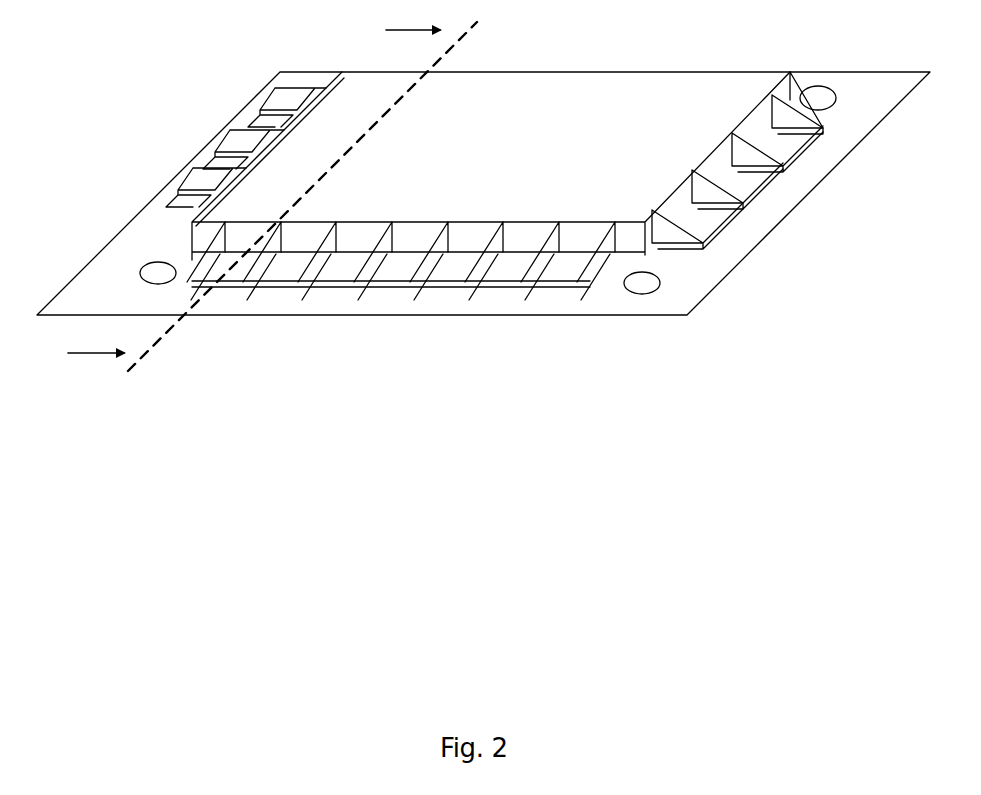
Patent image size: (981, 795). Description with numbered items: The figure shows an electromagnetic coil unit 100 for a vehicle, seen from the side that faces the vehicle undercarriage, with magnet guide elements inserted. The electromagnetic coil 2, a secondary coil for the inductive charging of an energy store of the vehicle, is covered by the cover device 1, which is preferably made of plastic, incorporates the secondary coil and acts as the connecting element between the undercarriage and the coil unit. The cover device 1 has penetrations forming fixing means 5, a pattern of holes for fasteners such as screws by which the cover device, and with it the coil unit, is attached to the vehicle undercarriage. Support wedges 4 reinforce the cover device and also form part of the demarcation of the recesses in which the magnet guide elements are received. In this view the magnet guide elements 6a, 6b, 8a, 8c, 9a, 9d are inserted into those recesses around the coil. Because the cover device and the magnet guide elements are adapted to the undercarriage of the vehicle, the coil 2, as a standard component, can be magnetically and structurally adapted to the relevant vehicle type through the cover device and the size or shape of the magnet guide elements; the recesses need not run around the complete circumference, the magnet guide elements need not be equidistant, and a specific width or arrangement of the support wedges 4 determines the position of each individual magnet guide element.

The electromagnetic coil unit 100 is at (474, 244).
The cover device 1 is at (483, 265).
The electromagnetic coil 2 is at (456, 268).
The support wedge 4 is at (274, 245).
The fixing means 5 is at (642, 285).
The magnet guide element 6a is at (712, 217).
The magnet guide element 6b is at (747, 175).
The magnet guide element 8a is at (280, 100).
The magnet guide element 8c is at (208, 178).
The magnet guide element 9a is at (215, 274).
The magnet guide element 9d is at (385, 272).